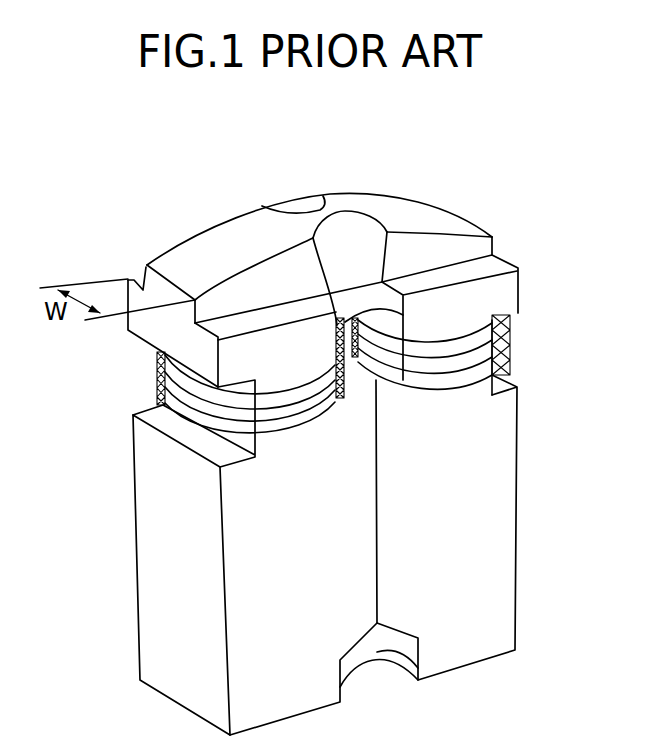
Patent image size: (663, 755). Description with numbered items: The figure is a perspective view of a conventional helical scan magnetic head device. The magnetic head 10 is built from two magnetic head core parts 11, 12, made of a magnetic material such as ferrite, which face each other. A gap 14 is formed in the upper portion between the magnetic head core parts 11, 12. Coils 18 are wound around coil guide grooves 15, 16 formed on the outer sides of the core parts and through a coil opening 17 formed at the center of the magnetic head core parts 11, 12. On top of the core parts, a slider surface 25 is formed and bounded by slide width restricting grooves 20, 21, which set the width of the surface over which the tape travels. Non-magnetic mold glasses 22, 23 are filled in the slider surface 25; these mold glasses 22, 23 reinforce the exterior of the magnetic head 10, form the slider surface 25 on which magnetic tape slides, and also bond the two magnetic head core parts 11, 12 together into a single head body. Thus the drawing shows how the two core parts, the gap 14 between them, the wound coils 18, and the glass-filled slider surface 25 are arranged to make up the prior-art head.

The magnetic head 10 is at (172, 236).
The magnetic head core part 11 is at (162, 583).
The magnetic head core part 12 is at (495, 567).
The gap 14 is at (352, 223).
The coil guide groove 15 is at (190, 433).
The coil guide groove 16 is at (510, 367).
The coil opening 17 is at (377, 383).
The coils 18 is at (160, 383).
The slide width restricting groove 20 is at (138, 266).
The slide width restricting groove 21 is at (240, 320).
The non-magnetic mold glass 22 is at (305, 202).
The non-magnetic mold glass 23 is at (407, 213).
The slider surface 25 is at (440, 207).